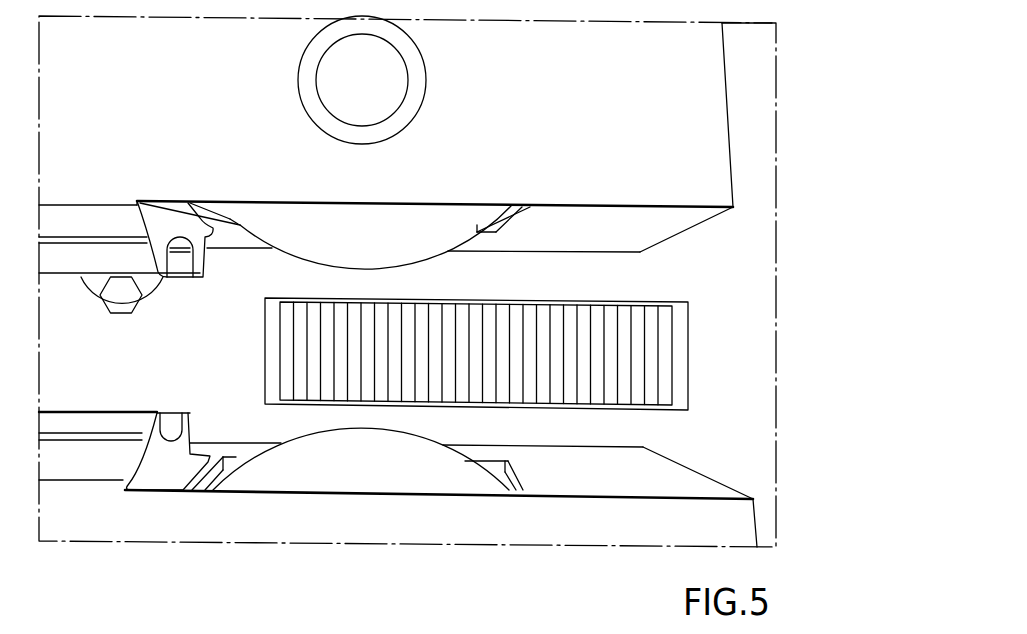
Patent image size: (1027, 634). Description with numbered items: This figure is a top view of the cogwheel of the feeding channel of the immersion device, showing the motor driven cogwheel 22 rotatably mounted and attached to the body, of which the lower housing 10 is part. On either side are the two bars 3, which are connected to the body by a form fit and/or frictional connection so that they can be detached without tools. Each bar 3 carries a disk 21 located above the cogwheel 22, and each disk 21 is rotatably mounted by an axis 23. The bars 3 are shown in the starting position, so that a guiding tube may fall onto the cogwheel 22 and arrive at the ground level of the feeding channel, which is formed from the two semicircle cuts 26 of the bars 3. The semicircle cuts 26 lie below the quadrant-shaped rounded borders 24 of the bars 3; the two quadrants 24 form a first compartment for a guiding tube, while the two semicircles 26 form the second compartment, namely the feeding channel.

The bar 3 is at (167, 103).
The lower housing 10 is at (752, 338).
The disk 21 is at (307, 227).
The motor driven cogwheel 22 is at (513, 345).
The axis 23 is at (380, 93).
The rounded border 24 is at (93, 257).
The semicircle cut 26 is at (182, 270).